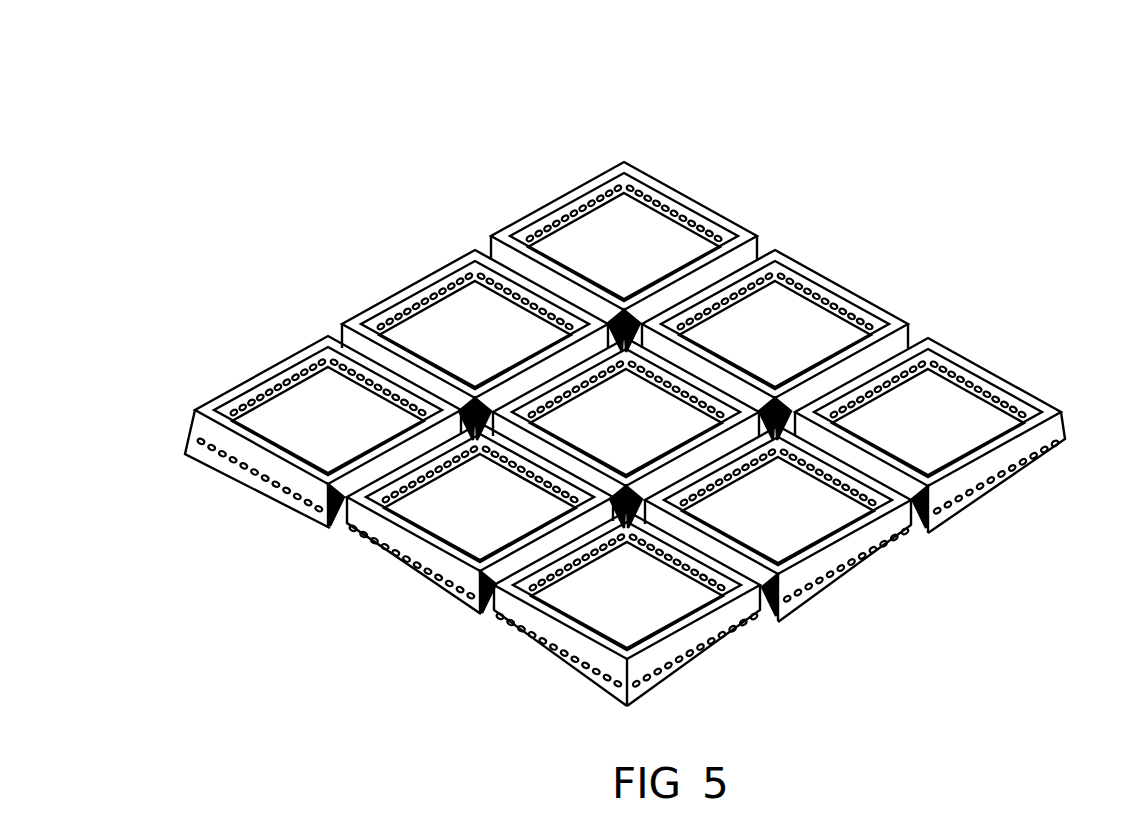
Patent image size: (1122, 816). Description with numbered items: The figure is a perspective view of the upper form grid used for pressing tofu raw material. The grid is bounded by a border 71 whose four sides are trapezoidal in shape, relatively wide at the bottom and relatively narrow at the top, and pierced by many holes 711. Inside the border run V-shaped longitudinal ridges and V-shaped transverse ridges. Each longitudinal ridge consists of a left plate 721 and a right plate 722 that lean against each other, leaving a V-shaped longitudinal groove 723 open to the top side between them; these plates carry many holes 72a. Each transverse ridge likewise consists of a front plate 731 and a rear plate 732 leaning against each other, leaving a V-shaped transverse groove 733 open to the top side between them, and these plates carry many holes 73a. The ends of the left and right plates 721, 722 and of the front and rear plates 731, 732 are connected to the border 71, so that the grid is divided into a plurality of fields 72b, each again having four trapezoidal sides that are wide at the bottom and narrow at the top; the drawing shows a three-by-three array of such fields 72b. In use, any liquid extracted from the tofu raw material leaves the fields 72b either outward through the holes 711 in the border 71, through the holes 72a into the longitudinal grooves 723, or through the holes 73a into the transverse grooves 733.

The border 71 is at (929, 527).
The holes 711 is at (893, 533).
The left plate 721 is at (352, 467).
The right plate 722 is at (407, 465).
The V-shaped longitudinal groove 723 is at (893, 347).
The holes 72a is at (408, 465).
The fields 72b is at (628, 222).
The front plate 731 is at (781, 610).
The rear plate 732 is at (810, 590).
The V-shaped transverse groove 733 is at (492, 248).
The holes 73a is at (845, 463).